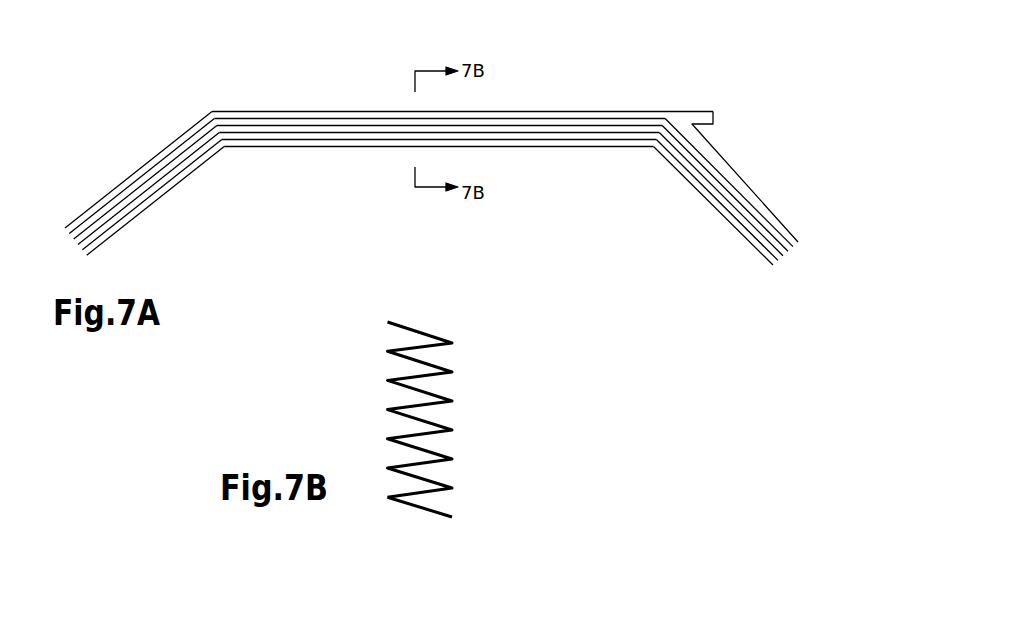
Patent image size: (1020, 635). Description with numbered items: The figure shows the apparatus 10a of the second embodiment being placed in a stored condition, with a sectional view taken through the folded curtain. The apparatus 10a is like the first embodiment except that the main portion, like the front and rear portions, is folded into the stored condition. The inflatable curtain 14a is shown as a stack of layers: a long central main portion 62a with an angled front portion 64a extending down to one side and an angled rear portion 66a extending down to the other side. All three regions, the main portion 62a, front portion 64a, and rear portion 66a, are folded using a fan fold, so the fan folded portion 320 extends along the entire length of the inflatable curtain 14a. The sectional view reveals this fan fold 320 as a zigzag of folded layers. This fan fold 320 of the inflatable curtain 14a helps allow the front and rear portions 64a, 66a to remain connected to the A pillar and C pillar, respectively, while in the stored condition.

In FIG. 7A, the apparatus 10a is at (134, 86).
In FIG. 7A, the inflatable curtain 14a is at (336, 86).
In FIG. 7B, the inflatable curtain 14a is at (347, 418).
In FIG. 7A, the main portion 62a is at (347, 141).
In FIG. 7B, the main portion 62a is at (437, 452).
In FIG. 7A, the front portion 64a is at (130, 197).
In FIG. 7A, the rear portion 66a is at (728, 195).
In FIG. 7A, the fan folded portion 320 is at (566, 169).
In FIG. 7B, the fan folded portion 320 is at (476, 509).